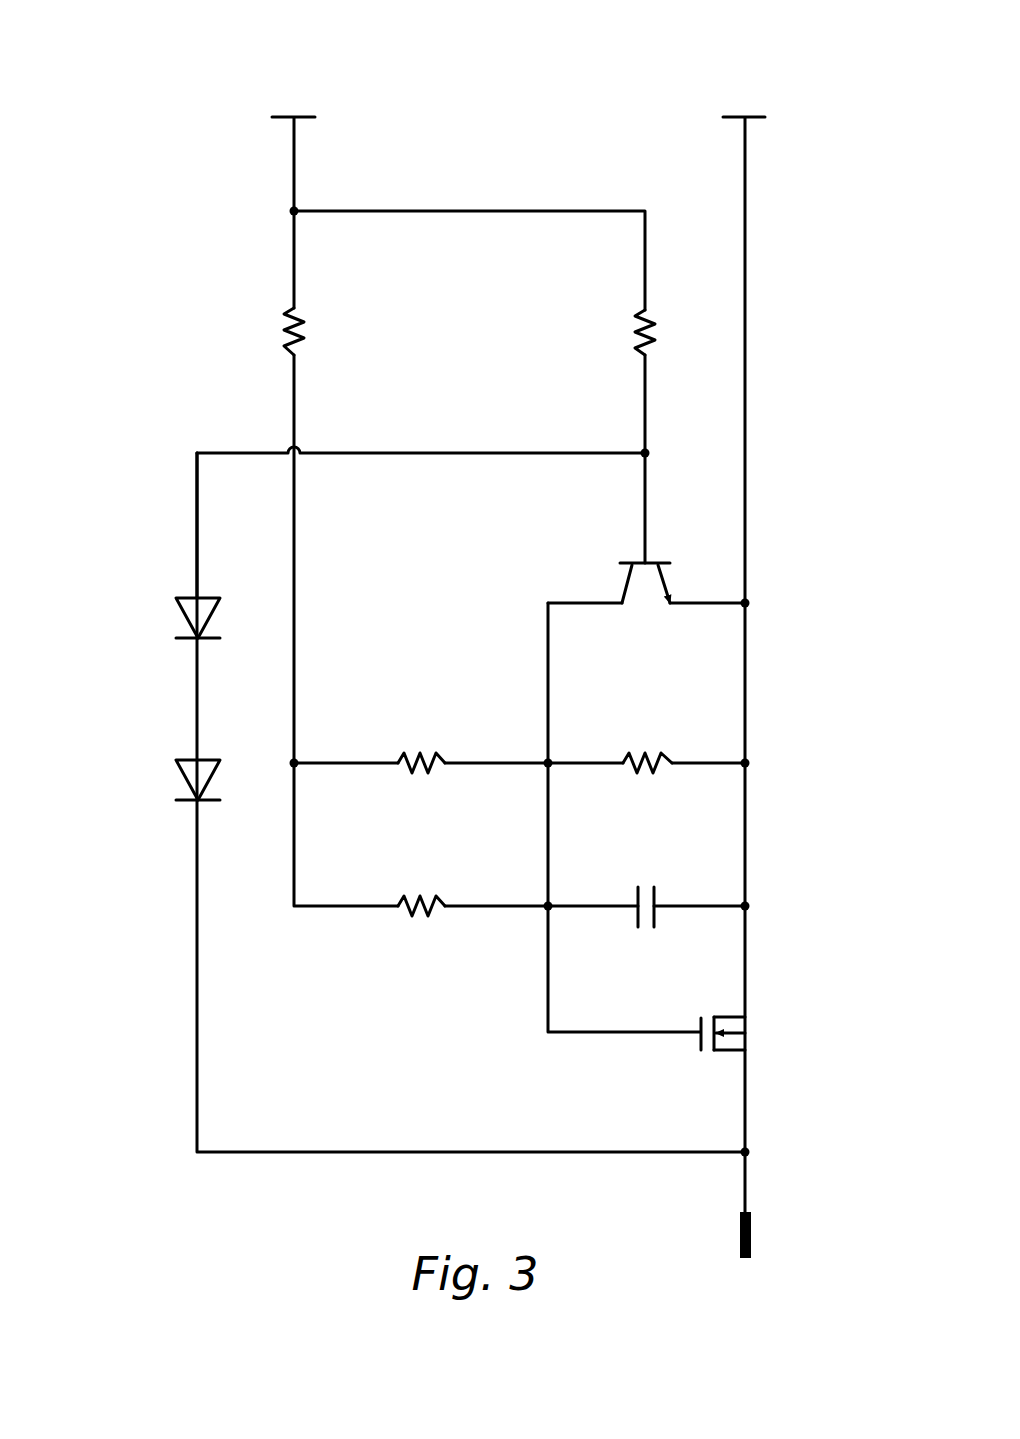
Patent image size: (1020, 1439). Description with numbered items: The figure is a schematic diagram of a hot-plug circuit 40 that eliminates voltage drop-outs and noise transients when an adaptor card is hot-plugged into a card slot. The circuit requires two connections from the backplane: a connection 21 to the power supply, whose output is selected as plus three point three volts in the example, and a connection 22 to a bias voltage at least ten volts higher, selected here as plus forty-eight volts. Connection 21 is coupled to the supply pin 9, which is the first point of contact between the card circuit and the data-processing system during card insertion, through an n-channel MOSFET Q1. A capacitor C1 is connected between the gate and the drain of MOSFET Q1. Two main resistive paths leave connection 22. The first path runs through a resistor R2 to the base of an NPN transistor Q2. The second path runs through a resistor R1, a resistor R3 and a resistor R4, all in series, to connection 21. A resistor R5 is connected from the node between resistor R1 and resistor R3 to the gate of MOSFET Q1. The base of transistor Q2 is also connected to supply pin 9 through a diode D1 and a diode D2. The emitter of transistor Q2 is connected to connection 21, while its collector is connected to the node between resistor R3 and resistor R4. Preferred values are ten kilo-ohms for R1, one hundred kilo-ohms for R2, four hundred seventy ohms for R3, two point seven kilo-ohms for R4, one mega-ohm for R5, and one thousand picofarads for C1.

The hot-plug circuit 40 is at (522, 98).
The connection to bias voltage 22 is at (284, 120).
The connection to power supply 21 is at (756, 120).
The supply pin 9 is at (758, 1232).
The resistor R1 is at (284, 320).
The resistor R2 is at (634, 320).
The resistor R3 is at (414, 750).
The resistor R4 is at (639, 750).
The resistor R5 is at (414, 893).
The capacitor C1 is at (645, 886).
The n-channel MOSFET Q1 is at (700, 1058).
The NPN transistor Q2 is at (615, 552).
The diode D1 is at (170, 617).
The diode D2 is at (170, 777).